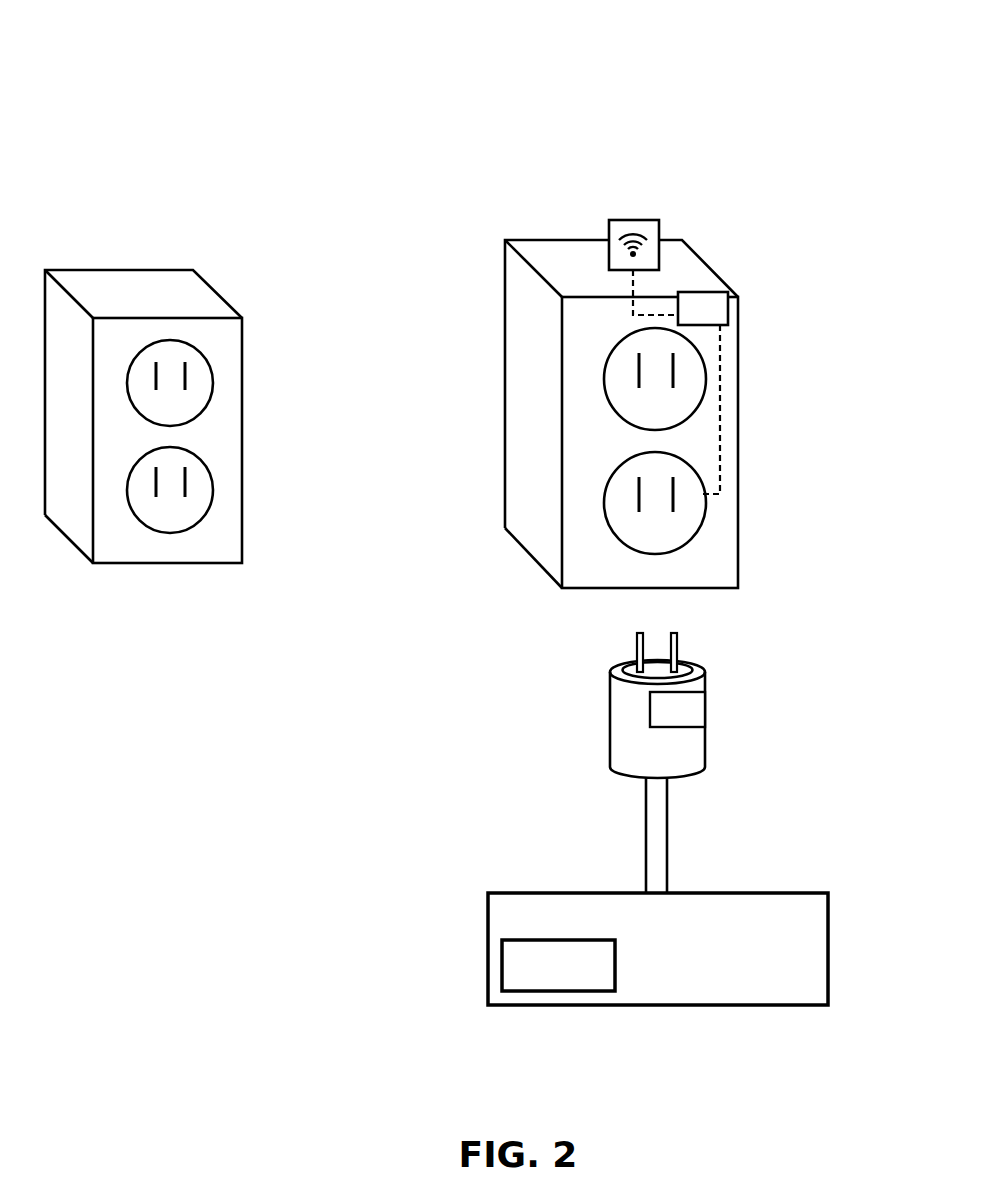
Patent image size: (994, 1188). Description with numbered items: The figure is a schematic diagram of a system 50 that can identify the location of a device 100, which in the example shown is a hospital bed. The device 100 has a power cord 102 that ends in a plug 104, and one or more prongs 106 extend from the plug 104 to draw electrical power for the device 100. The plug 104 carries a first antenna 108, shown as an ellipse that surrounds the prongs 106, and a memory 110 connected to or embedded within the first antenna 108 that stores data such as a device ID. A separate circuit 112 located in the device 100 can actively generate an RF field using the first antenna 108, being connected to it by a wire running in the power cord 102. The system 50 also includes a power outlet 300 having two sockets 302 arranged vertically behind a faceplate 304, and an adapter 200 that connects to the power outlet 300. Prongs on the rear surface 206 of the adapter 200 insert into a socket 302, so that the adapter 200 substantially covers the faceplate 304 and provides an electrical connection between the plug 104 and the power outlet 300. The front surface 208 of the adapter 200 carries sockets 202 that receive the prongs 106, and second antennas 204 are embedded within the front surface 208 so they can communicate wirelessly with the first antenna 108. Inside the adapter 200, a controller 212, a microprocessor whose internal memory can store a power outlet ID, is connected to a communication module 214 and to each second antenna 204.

The system 50 is at (152, 82).
The device 100 is at (649, 939).
The power cord 102 is at (665, 859).
The plug 104 is at (591, 716).
The prongs 106 is at (677, 655).
The first antenna 108 is at (613, 668).
The memory 110 is at (677, 709).
The separate circuit 112 is at (517, 965).
The adapter 200 is at (602, 369).
The socket 202 is at (622, 368).
The second antenna 204 is at (603, 380).
The rear surface 206 is at (507, 300).
The front surface 208 is at (725, 418).
The controller 212 is at (703, 308).
The communication module 214 is at (635, 220).
The power outlet 300 is at (183, 372).
The socket 302 is at (172, 355).
The faceplate 304 is at (225, 365).